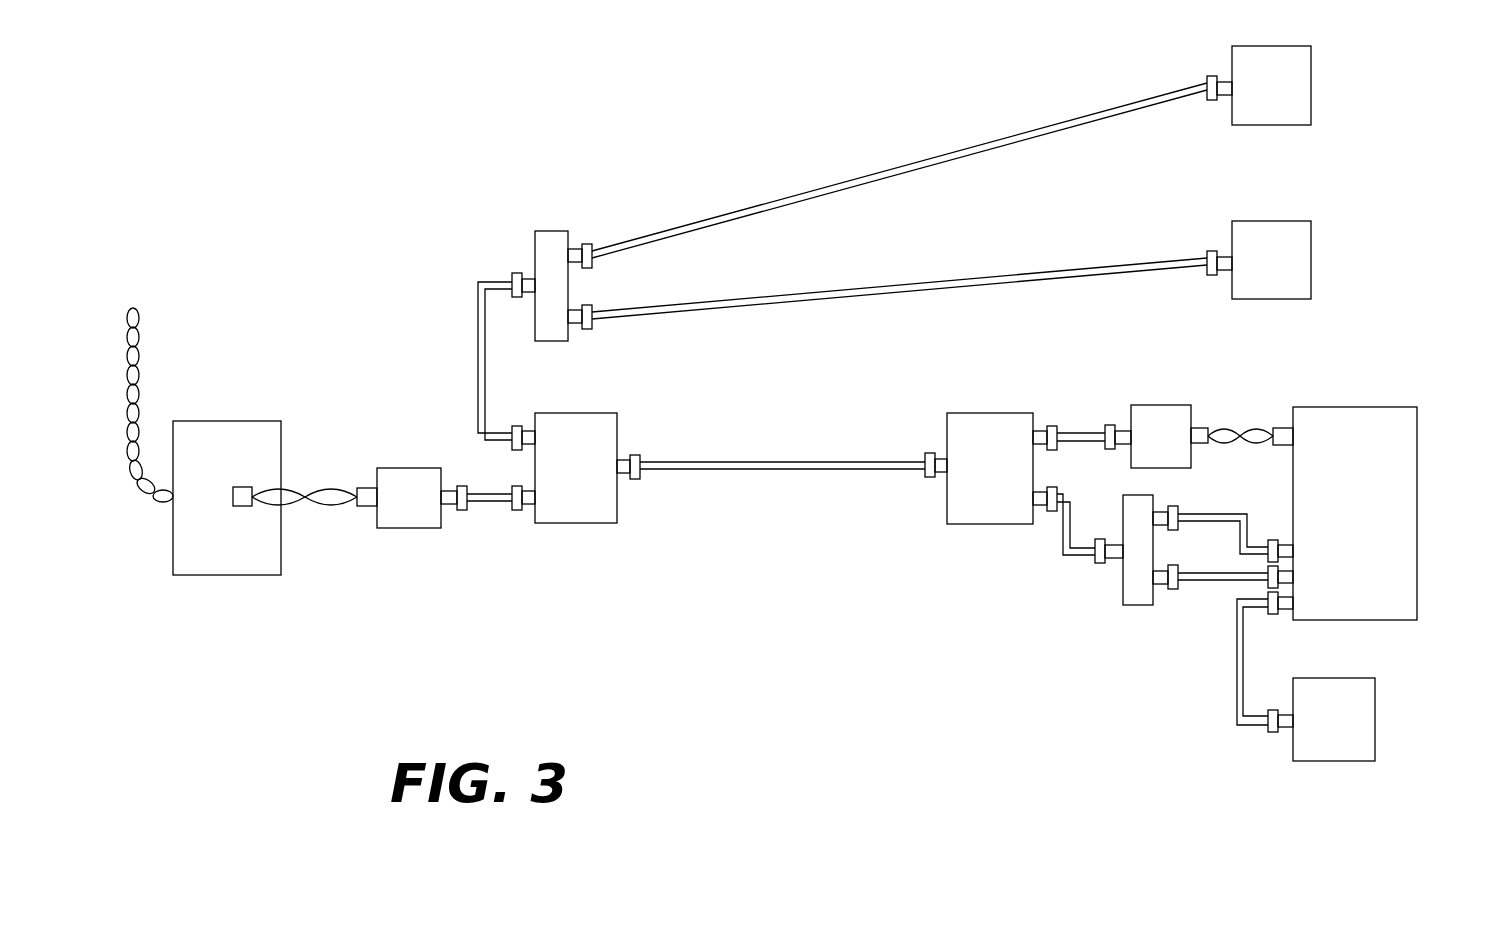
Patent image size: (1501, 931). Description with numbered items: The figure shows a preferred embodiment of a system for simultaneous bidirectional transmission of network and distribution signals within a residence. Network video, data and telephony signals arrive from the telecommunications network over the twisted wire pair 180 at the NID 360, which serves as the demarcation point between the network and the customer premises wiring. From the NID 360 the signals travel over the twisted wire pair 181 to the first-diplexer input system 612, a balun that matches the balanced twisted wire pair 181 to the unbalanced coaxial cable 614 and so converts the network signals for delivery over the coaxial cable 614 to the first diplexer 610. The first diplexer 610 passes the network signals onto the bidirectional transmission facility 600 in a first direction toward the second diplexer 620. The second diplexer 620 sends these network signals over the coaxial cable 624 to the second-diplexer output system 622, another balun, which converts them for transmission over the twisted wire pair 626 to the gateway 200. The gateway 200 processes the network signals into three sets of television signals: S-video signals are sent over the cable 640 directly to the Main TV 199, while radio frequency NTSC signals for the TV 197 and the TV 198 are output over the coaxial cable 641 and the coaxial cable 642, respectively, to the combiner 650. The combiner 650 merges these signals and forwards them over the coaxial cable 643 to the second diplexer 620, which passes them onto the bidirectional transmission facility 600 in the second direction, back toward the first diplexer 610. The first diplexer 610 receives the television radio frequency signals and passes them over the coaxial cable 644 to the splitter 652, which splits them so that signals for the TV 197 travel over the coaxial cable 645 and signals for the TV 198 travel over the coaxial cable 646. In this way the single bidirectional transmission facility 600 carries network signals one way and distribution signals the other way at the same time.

The twisted wire pair 180 is at (140, 355).
The twisted wire pair 181 is at (326, 490).
The NID 360 is at (225, 575).
The first-diplexer input system 612 is at (405, 528).
The coaxial cable 614 is at (488, 505).
The first diplexer 610 is at (550, 523).
The coaxial cable 644 is at (478, 318).
The splitter 652 is at (535, 245).
The coaxial cable 646 is at (800, 195).
The coaxial cable 645 is at (828, 290).
The TV 198 is at (1311, 85).
The TV 197 is at (1311, 260).
The bidirectional transmission facility 600 is at (765, 473).
The second diplexer 620 is at (947, 510).
The coaxial cable 624 is at (1080, 432).
The second-diplexer output system 622 is at (1160, 405).
The twisted wire pair 626 is at (1233, 432).
The gateway 200 is at (1360, 407).
The coaxial cable 643 is at (1063, 540).
The combiner 650 is at (1135, 605).
The coaxial cable 642 is at (1210, 513).
The coaxial cable 641 is at (1205, 580).
The cable 640 is at (1237, 678).
The Main TV 199 is at (1337, 761).